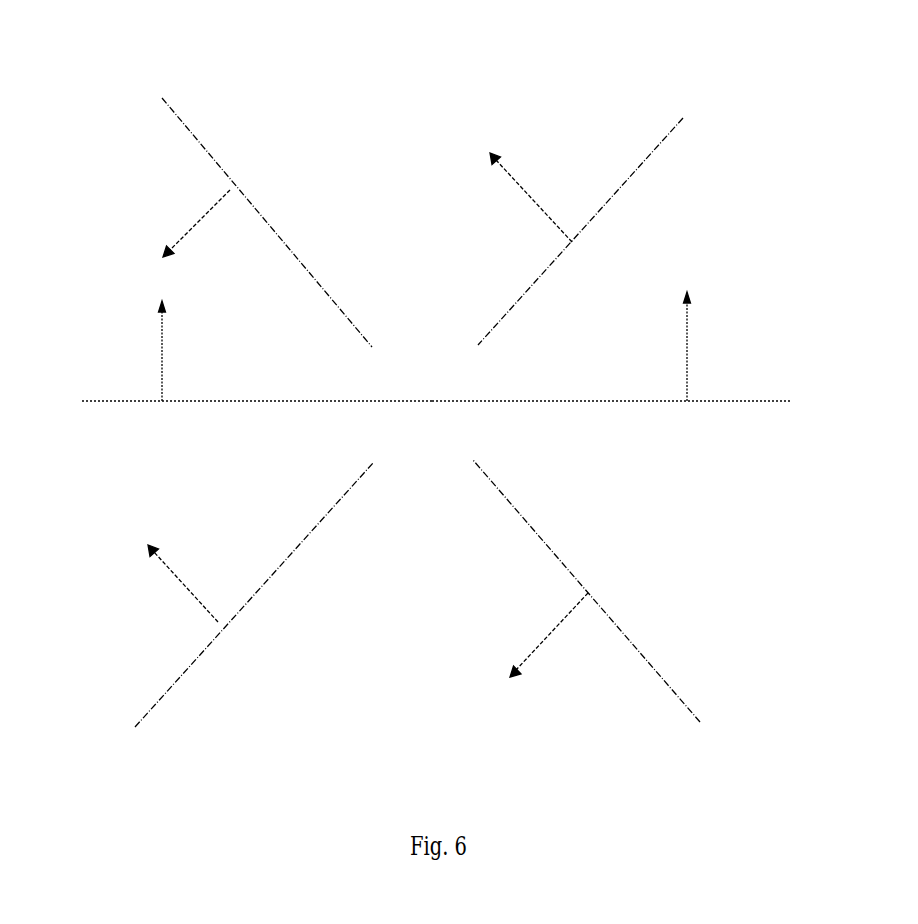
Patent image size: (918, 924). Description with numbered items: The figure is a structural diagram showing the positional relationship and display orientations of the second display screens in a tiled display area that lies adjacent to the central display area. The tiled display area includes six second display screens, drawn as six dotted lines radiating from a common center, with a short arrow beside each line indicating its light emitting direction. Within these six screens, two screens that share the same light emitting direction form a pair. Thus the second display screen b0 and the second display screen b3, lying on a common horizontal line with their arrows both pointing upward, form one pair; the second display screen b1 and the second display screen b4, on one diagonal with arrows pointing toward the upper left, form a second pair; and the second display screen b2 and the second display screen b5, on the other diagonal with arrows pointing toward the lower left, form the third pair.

The second display screen b0 is at (650, 359).
The second display screen b1 is at (607, 203).
The second display screen b2 is at (243, 182).
The second display screen b3 is at (220, 363).
The second display screen b4 is at (217, 623).
The second display screen b5 is at (617, 627).